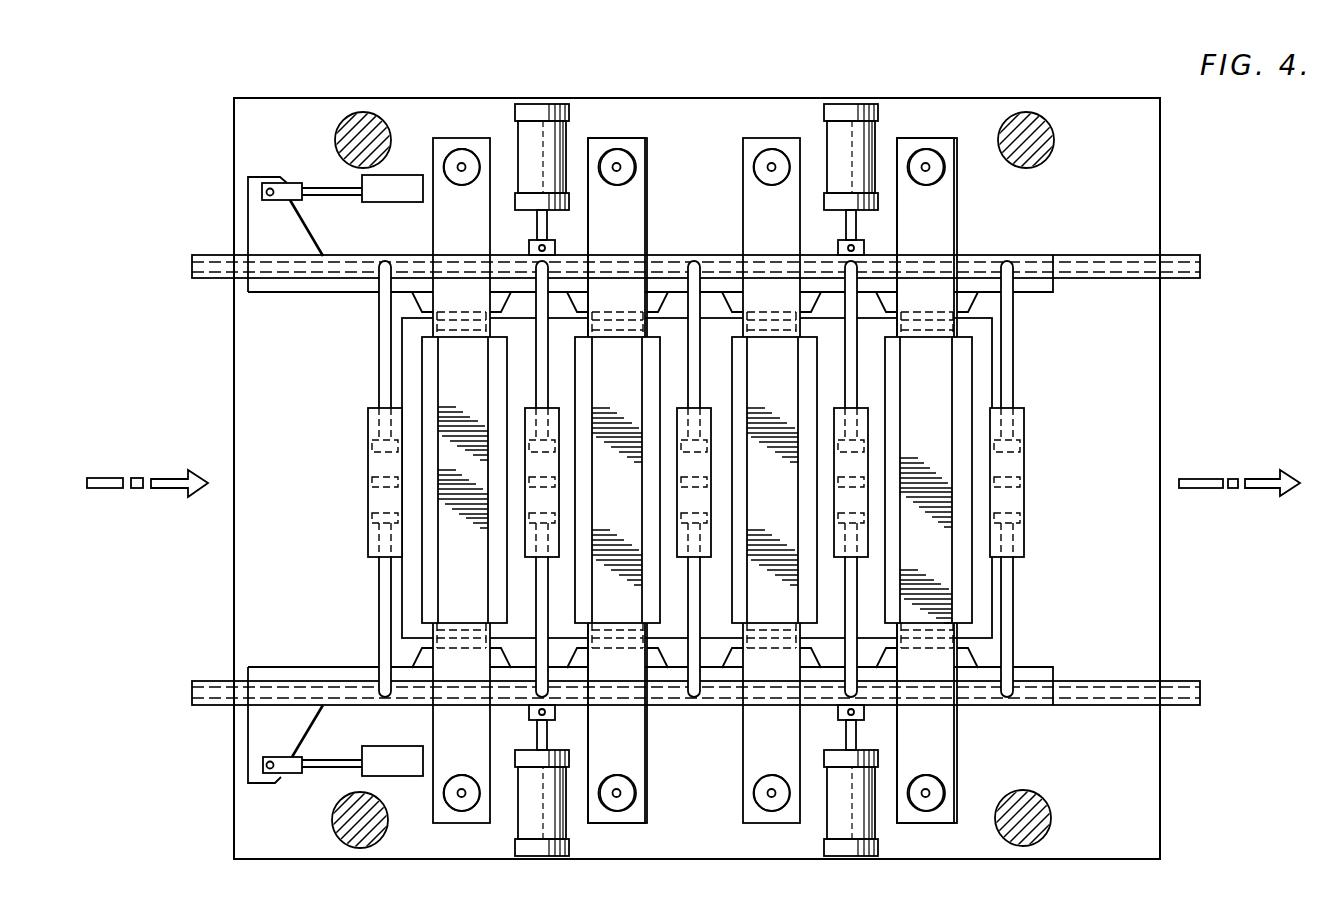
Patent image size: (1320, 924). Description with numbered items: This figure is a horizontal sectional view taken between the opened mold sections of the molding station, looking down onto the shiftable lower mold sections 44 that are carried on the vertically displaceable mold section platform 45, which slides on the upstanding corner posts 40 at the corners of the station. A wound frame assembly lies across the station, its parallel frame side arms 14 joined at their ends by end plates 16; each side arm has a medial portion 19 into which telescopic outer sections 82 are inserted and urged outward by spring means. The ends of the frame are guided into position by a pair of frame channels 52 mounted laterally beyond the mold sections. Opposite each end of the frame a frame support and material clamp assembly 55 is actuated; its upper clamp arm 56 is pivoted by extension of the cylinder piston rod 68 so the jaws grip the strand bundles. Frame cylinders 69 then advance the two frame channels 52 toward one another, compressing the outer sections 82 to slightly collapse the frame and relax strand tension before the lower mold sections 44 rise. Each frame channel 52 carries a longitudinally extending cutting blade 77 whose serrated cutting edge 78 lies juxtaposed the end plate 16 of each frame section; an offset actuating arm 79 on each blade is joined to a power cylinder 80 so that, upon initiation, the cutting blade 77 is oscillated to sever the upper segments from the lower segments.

The frame side arm 14 is at (697, 487).
The end plate 16 is at (983, 303).
The medial portion 19 is at (1015, 466).
The corner post 40 is at (1048, 151).
The lower mold section 44 is at (498, 403).
The mold section platform 45 is at (248, 381).
The frame channel 52 is at (198, 265).
The frame support and material clamp assembly 55 is at (727, 473).
The upper clamp arm 56 is at (762, 750).
The cylinder piston rod 68 is at (771, 792).
The frame cylinder 69 is at (563, 140).
The cutting blade 77 is at (1023, 292).
The serrated cutting edge 78 is at (448, 292).
The offset actuating arm 79 is at (632, 480).
The power cylinder 80 is at (398, 187).
The outer section 82 is at (379, 376).